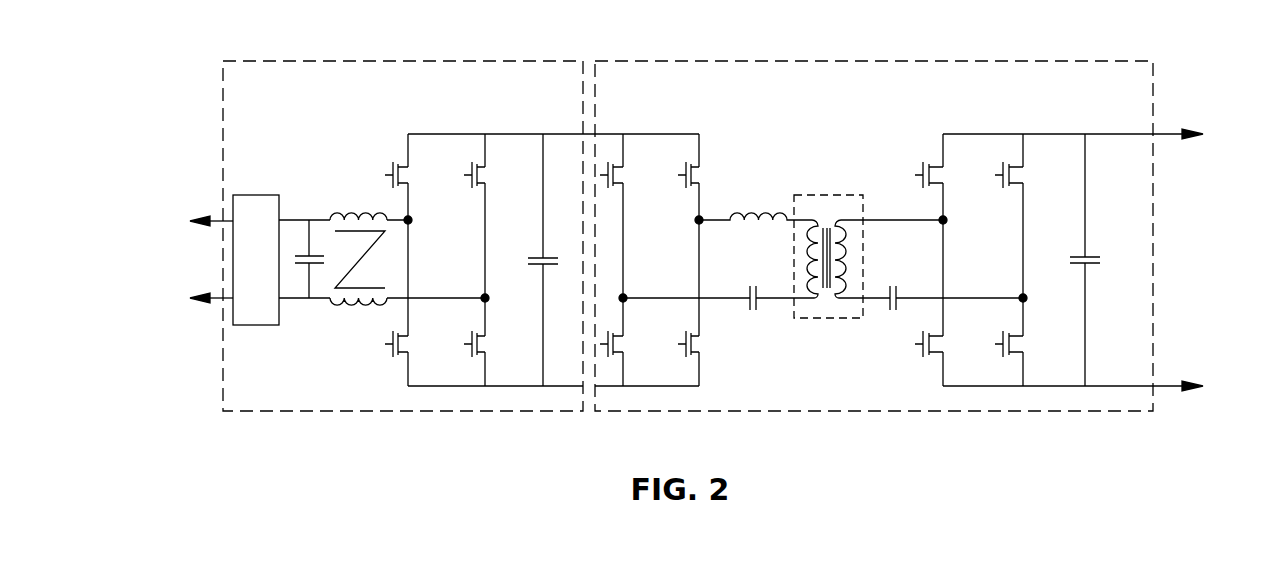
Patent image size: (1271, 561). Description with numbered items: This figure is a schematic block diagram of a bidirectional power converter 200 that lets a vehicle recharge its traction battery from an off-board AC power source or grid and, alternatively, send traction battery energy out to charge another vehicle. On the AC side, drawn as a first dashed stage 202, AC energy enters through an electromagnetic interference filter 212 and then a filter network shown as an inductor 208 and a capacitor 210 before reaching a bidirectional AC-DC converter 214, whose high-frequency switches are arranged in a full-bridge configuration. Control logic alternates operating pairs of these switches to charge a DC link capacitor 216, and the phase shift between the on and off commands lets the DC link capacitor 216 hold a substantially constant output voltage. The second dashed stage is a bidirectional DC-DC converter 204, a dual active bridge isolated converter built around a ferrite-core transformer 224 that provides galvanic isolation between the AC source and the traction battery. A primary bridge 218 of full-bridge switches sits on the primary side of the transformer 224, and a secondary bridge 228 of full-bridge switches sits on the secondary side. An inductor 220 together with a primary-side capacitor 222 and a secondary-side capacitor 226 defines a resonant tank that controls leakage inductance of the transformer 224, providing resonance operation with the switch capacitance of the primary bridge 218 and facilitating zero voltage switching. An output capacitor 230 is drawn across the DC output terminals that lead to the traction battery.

The bidirectional power converter 200 is at (1204, 59).
The AC/DC converter stage 202 is at (422, 58).
The bidirectional DC-DC converter 204 is at (886, 59).
The filter inductor 208 is at (337, 306).
The filter capacitor 210 is at (298, 254).
The electromagnetic interference filter 212 is at (250, 327).
The bidirectional AC-DC converter 214 is at (466, 176).
The DC link capacitor 216 is at (557, 257).
The primary bridge 218 is at (680, 176).
The inductor 220 is at (775, 213).
The capacitor 222 is at (757, 304).
The ferrite-core transformer 224 is at (818, 321).
The capacitor 226 is at (897, 292).
The secondary bridge 228 is at (996, 176).
The input/output capacitor 230 is at (1095, 255).